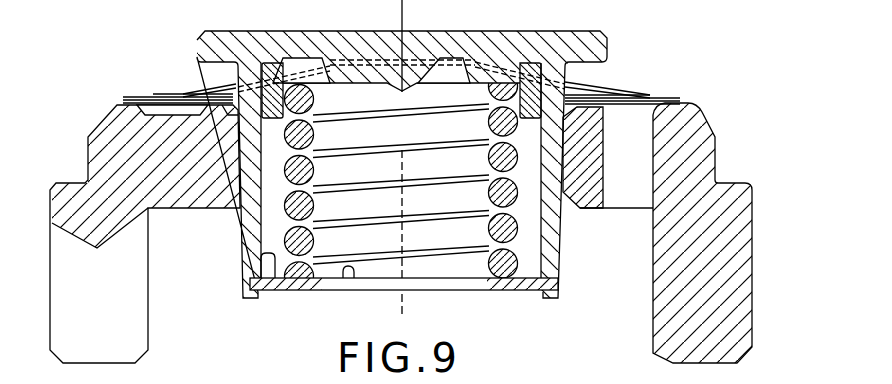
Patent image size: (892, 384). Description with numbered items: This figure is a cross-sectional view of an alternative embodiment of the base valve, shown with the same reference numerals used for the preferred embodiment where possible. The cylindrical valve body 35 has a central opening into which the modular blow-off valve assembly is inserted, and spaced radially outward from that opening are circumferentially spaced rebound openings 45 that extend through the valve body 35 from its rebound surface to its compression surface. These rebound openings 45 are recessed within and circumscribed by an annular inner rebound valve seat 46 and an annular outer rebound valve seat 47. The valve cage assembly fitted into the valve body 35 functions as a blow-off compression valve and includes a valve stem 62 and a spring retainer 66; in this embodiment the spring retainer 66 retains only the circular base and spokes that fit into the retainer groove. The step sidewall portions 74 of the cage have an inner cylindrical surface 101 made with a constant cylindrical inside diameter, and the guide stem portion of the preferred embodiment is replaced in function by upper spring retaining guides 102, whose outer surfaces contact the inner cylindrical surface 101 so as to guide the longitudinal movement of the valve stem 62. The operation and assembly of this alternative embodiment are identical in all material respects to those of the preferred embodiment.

The valve body 35 is at (733, 145).
The rebound openings 45 is at (628, 148).
The inner rebound valve seat 46 is at (183, 99).
The outer rebound valve seat 47 is at (116, 104).
The valve stem 62 is at (444, 95).
The spring retainer 66 is at (343, 278).
The step sidewall portions 74 is at (232, 260).
The inner cylindrical surface 101 is at (272, 272).
The upper spring retaining guides 102 is at (300, 83).